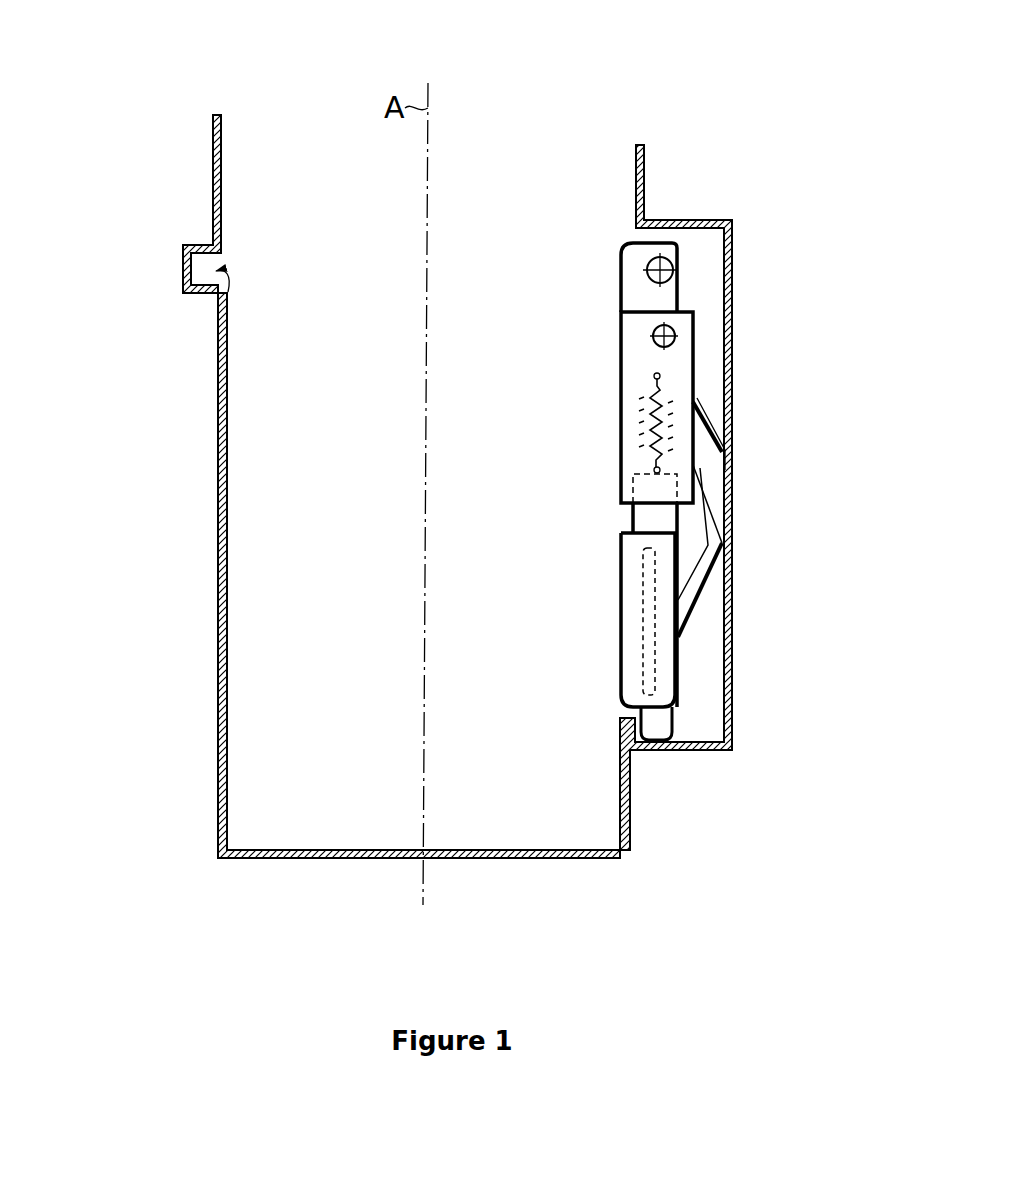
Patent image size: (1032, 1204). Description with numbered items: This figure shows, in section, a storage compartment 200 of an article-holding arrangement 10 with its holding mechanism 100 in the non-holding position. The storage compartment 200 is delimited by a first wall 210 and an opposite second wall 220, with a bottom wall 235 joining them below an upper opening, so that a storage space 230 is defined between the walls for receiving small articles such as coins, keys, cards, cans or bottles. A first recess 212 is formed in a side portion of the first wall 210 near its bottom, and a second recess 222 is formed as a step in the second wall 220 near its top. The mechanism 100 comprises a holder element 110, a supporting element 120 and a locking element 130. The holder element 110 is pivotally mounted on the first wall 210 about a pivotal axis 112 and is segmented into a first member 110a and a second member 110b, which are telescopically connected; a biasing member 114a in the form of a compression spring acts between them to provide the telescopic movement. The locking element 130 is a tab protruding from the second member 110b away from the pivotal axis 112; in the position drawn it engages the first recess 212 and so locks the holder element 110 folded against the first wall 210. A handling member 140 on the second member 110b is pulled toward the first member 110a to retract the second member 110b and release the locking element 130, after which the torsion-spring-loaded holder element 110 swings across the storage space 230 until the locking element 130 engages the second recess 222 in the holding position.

The fastening structure 10 is at (213, 72).
The mechanism 100 is at (697, 283).
The holder element 110 is at (604, 383).
The first member 110a is at (620, 408).
The second member 110b is at (618, 604).
The pivotal axis 112 is at (649, 266).
The biasing member 114a is at (680, 396).
The supporting element 120 is at (706, 510).
The locking element 130 is at (703, 748).
The handling member 140 is at (656, 675).
The storage compartment 200 is at (178, 797).
The first wall 210 is at (735, 312).
The first recess 212 is at (700, 722).
The second wall 220 is at (218, 478).
The second recess 222 is at (221, 297).
The storage space 230 is at (498, 150).
The bottom wall 235 is at (303, 857).